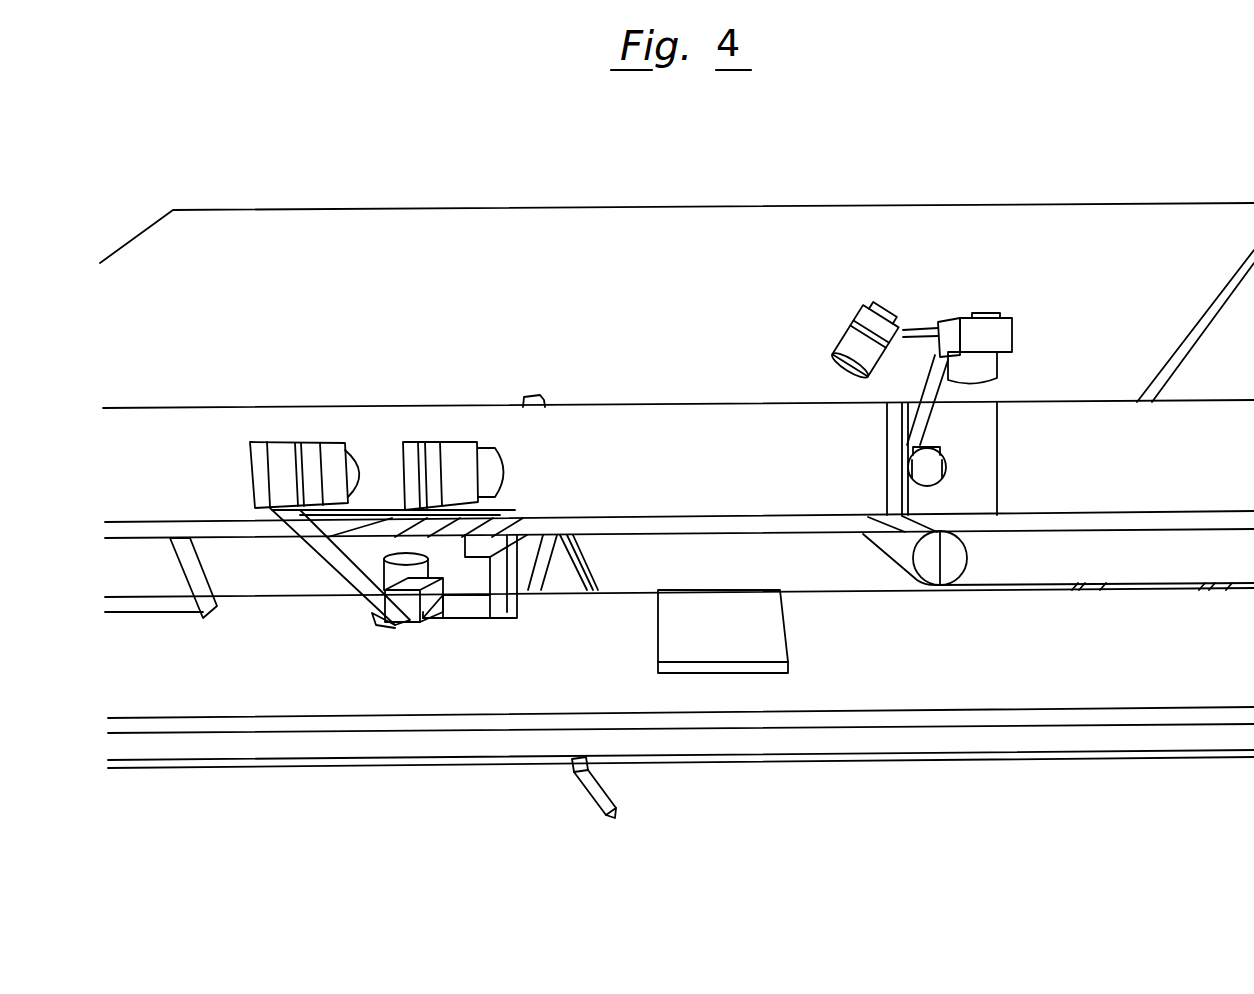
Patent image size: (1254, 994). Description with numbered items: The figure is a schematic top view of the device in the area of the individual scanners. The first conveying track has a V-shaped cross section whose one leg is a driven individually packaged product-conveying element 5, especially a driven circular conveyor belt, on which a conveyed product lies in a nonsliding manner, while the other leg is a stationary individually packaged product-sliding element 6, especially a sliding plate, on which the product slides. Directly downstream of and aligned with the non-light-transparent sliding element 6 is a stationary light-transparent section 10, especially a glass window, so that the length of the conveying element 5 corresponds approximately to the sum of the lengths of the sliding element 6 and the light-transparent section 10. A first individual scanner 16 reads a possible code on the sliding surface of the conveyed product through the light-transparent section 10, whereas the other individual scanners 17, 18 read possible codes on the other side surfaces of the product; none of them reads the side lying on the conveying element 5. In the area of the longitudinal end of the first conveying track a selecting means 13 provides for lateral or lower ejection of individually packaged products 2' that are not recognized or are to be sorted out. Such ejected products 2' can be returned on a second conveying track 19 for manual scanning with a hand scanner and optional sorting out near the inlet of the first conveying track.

The individually packaged product 2' is at (723, 631).
The individually packaged product-conveying element 5 is at (1146, 463).
The individually packaged product-sliding element 6 is at (731, 463).
The light-transparent section 10 is at (986, 435).
The selecting means 13 is at (163, 594).
The first individual scanner 16 is at (410, 578).
The individual scanner 17 is at (308, 457).
The individual scanner 18 is at (449, 457).
The second conveying track 19 is at (906, 662).